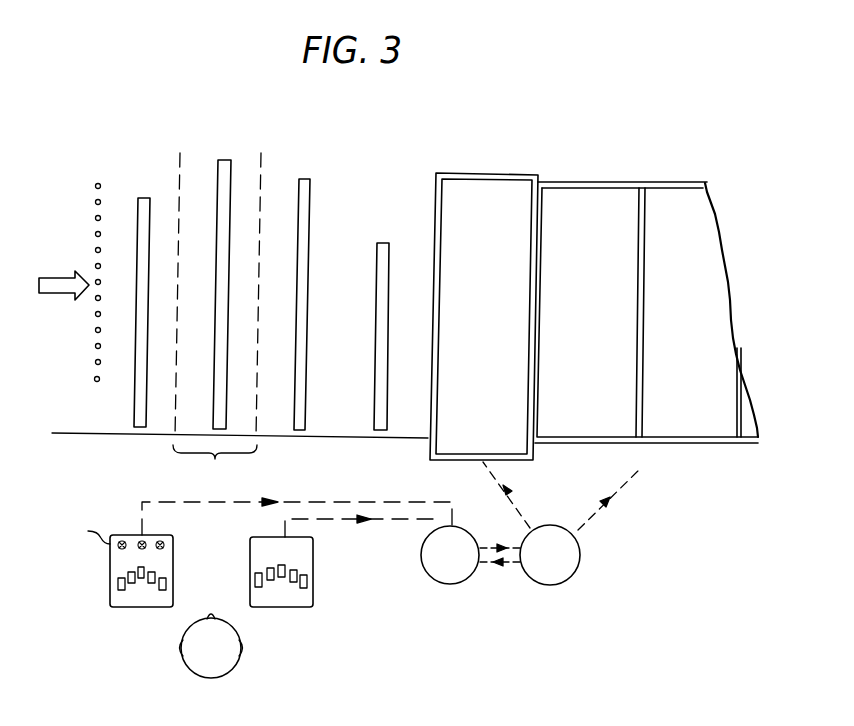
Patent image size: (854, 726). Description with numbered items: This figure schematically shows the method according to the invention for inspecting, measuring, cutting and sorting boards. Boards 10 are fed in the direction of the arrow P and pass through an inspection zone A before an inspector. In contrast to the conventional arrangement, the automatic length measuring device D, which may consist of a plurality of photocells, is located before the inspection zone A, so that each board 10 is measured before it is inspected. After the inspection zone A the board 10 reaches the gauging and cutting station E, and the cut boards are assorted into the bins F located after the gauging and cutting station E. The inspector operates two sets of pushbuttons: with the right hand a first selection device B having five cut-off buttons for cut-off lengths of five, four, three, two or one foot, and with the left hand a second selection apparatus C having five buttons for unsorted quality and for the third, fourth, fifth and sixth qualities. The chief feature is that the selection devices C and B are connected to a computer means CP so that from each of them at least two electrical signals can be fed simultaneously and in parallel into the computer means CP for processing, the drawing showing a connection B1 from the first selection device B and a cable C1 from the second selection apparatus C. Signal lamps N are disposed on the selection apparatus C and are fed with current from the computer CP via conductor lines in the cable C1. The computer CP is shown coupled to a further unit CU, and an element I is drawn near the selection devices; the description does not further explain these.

The arrow P is at (64, 272).
The automatic length measuring device D is at (94, 381).
The board 10 is at (217, 190).
The inspection zone A is at (215, 464).
The gauging and cutting station E is at (484, 316).
The bins F is at (646, 327).
The cable C1 is at (164, 498).
The signal lamps N is at (91, 532).
The second selection apparatus C is at (118, 607).
The instrument I is at (183, 631).
The first selection device B is at (288, 607).
The signal line B1 is at (380, 522).
The computer means CP is at (450, 555).
The control unit CU is at (550, 555).